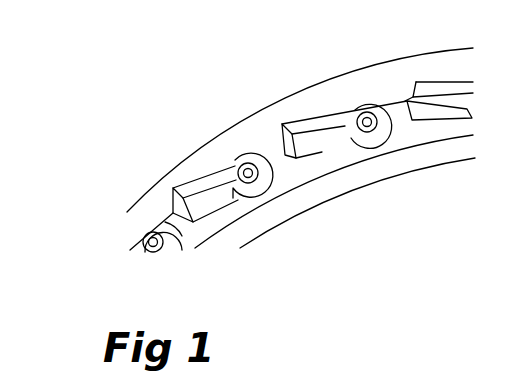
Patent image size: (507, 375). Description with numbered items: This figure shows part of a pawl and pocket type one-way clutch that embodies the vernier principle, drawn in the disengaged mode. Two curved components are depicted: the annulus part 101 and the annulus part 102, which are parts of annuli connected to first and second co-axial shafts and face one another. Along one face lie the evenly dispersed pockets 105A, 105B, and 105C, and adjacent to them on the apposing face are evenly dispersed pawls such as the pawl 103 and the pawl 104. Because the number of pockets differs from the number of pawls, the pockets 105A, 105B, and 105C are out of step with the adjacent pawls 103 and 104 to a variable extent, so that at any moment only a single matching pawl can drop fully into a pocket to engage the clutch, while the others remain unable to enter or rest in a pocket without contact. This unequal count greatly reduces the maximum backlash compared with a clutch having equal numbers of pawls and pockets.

The annulus part 101 is at (228, 151).
The annulus part 102 is at (292, 175).
The pawl 103 is at (202, 210).
The pawl 104 is at (281, 136).
The pocket 105A is at (172, 196).
The pocket 105B is at (301, 125).
The pocket 105C is at (483, 45).